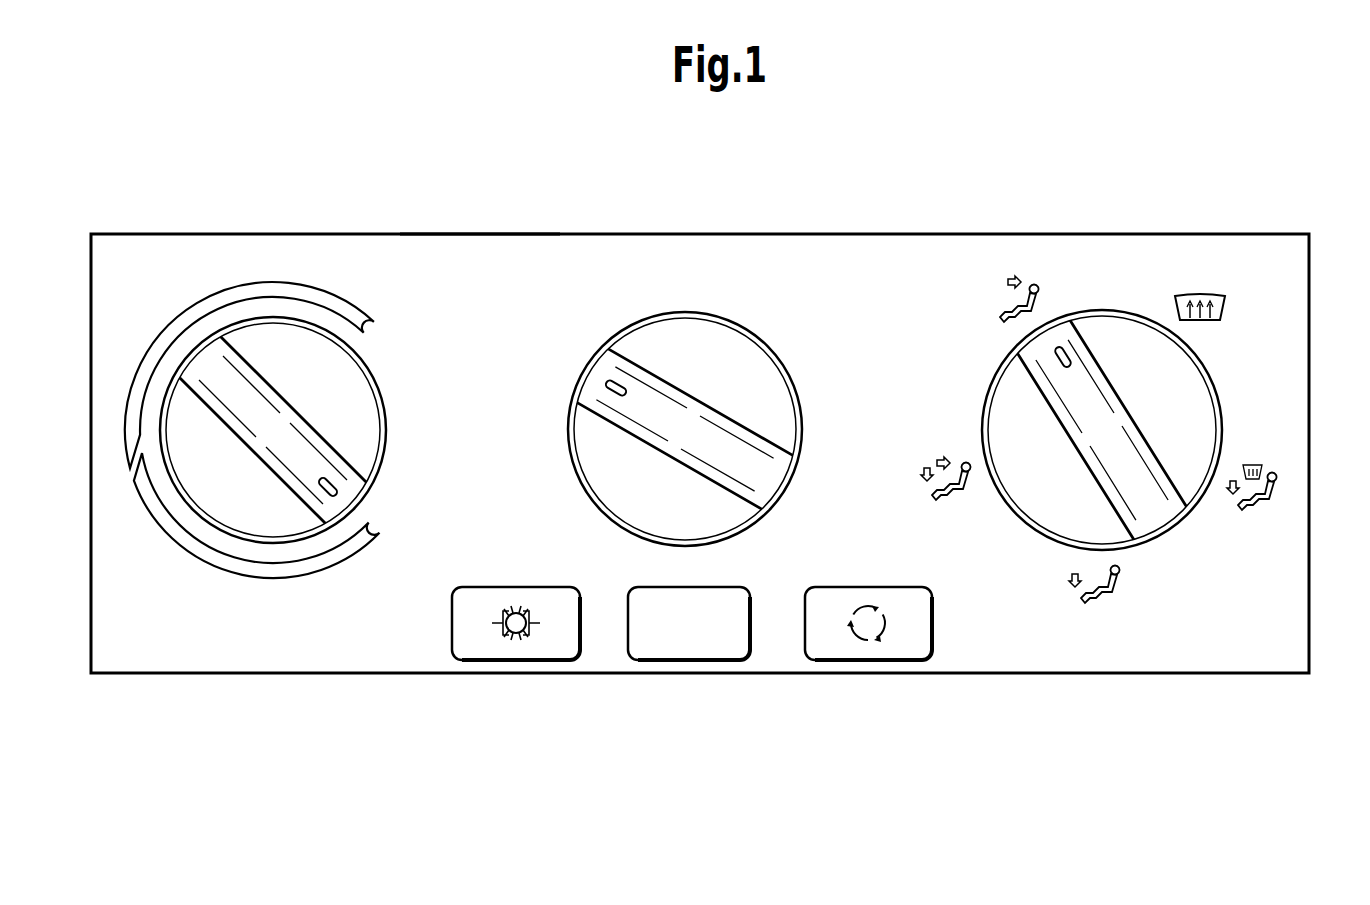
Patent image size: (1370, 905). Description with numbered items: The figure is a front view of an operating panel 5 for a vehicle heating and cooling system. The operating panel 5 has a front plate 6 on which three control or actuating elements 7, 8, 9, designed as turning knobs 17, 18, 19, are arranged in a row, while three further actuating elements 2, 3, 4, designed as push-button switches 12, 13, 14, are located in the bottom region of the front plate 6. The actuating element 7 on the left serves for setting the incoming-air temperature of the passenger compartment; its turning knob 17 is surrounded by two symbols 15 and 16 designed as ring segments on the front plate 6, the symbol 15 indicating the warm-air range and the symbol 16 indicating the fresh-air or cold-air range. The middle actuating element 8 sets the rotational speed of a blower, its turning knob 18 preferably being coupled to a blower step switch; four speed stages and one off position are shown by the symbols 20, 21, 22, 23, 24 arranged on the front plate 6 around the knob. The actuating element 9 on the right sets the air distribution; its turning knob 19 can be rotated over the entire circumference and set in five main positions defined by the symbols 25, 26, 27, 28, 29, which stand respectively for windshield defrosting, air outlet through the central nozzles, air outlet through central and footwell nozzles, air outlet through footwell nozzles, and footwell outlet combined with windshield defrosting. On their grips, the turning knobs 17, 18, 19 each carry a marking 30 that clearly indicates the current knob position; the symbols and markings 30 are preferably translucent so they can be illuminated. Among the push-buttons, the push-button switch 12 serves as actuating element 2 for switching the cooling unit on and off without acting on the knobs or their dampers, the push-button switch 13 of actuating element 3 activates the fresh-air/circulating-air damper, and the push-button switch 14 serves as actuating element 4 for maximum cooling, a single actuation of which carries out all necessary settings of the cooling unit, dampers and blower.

The actuating element 2 is at (437, 640).
The actuating element 3 is at (945, 648).
The actuating element 4 is at (615, 645).
The operating panel 5 is at (900, 225).
The front plate 6 is at (471, 258).
The actuating element 7 is at (277, 596).
The actuating element 8 is at (718, 298).
The actuating element 9 is at (1232, 372).
The push-button switch 12 is at (512, 656).
The push-button switch 13 is at (893, 655).
The push-button switch 14 is at (725, 650).
The symbol 15 is at (277, 285).
The symbol 16 is at (228, 565).
The turning knob 17 is at (213, 357).
The turning knob 18 is at (643, 420).
The turning knob 19 is at (1095, 385).
The symbol 20 is at (560, 328).
The symbol 21 is at (600, 274).
The symbol 22 is at (675, 257).
The symbol 23 is at (761, 276).
The symbol 24 is at (807, 329).
The symbol 25 is at (1197, 293).
The symbol 26 is at (1027, 278).
The symbol 27 is at (962, 497).
The symbol 28 is at (1098, 603).
The symbol 29 is at (1270, 467).
The marking 30 is at (340, 487).